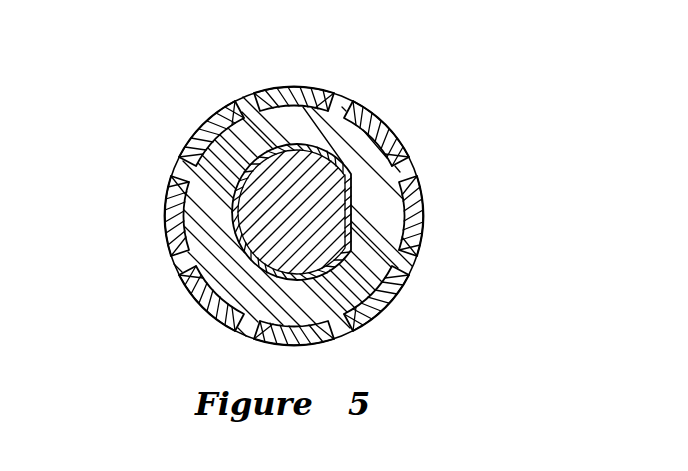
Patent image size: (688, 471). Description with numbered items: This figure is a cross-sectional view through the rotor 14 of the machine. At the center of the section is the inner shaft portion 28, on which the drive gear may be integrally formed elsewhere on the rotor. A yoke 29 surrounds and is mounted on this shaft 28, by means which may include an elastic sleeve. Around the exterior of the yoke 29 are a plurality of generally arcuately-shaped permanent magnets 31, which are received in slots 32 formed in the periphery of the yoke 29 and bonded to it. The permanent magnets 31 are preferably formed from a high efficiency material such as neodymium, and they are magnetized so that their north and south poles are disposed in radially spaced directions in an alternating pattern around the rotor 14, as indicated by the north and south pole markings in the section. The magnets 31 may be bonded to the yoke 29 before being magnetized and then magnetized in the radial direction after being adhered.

The rotor 14 is at (416, 111).
The inner shaft portion 28 is at (258, 242).
The yoke 29 is at (202, 200).
The permanent magnets 31 is at (424, 186).
The slots 32 is at (280, 95).